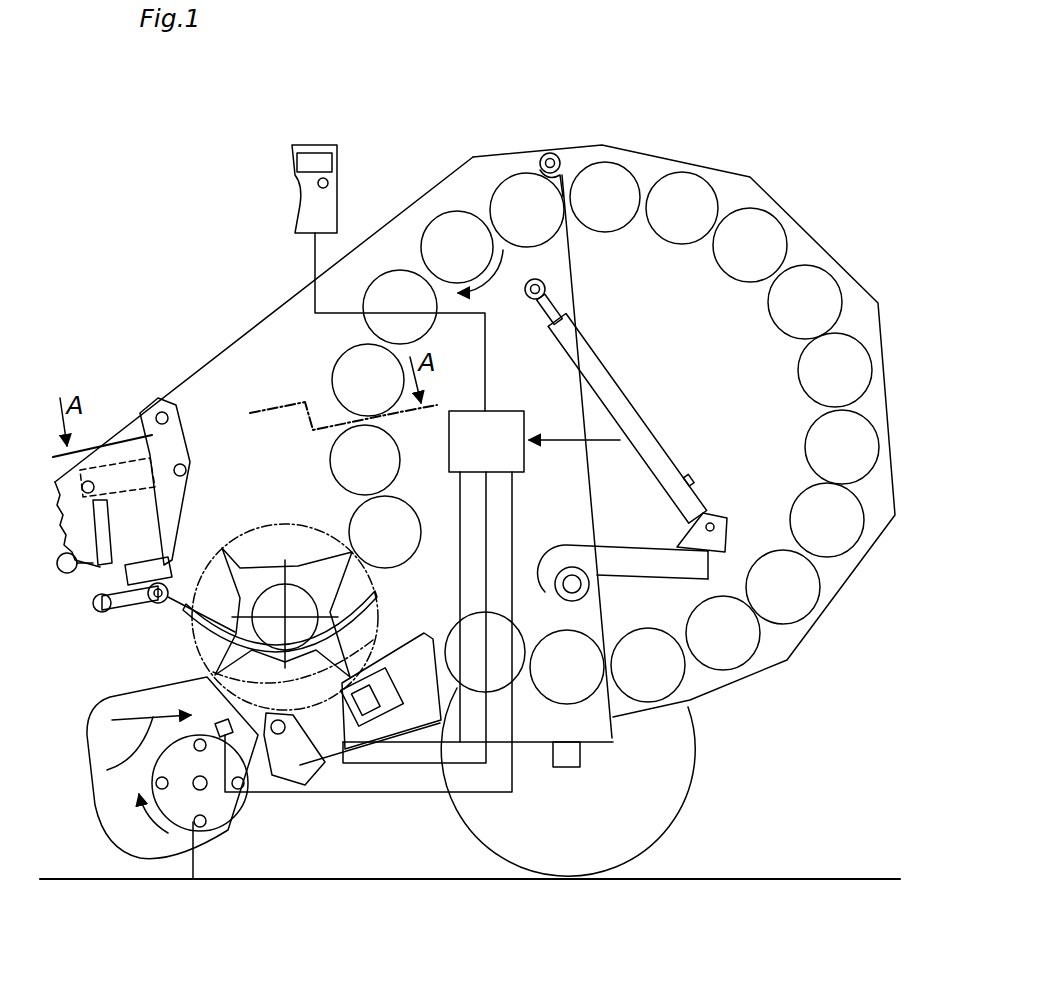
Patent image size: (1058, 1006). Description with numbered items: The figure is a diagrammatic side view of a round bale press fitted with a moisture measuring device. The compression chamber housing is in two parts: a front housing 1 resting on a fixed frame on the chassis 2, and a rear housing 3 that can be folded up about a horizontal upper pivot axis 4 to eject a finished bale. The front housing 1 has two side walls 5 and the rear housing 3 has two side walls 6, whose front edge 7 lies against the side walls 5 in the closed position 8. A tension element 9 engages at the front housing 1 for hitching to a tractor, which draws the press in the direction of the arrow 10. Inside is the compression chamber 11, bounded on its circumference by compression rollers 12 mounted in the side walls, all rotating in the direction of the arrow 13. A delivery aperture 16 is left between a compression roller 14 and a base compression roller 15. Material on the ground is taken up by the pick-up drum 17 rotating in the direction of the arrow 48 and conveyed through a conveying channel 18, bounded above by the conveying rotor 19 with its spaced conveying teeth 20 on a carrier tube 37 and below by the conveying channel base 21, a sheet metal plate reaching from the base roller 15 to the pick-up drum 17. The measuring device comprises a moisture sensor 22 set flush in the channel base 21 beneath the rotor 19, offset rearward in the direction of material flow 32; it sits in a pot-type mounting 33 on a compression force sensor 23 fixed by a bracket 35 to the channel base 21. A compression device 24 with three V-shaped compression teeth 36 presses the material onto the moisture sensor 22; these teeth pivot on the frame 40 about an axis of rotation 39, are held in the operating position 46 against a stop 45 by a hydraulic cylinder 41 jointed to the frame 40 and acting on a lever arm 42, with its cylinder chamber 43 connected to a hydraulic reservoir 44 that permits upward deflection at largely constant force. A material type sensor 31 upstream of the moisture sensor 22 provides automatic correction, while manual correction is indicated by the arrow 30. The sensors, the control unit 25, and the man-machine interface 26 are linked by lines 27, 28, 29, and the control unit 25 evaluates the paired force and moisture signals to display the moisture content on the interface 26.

The front housing 1 is at (266, 304).
The chassis 2 is at (586, 770).
The rear housing 3 is at (722, 160).
The horizontal upper pivot axis 4 is at (551, 158).
The side walls of the front housing 5 is at (222, 388).
The side walls of the rear housing 6 is at (746, 192).
The front edge 7 is at (571, 280).
The closed position 8 is at (685, 110).
The tension element 9 is at (113, 458).
The direction of travel arrow 10 is at (114, 147).
The compression chamber 11 is at (715, 399).
The compression rollers 12 is at (457, 210).
The direction of rotation arrow 13 is at (500, 272).
The compression roller 14 is at (413, 558).
The base compression roller 15 is at (516, 690).
The delivery aperture 16 is at (313, 630).
The pick-up drum 17 is at (148, 858).
The conveying channel 18 is at (388, 742).
The conveying rotor 19 is at (304, 560).
The conveying teeth 20 is at (230, 570).
The conveying channel base 21 is at (326, 720).
The moisture sensor 22 is at (382, 668).
The compression force sensor 23 is at (430, 742).
The compression device 24 is at (168, 629).
The control unit 25 is at (486, 441).
The man-machine interface 26 is at (328, 198).
The line 27 is at (460, 498).
The line 28 is at (487, 500).
The line 29 is at (486, 356).
The arrow 30 is at (567, 440).
The material type sensor 31 is at (222, 736).
The direction of flow of the material 32 is at (93, 753).
The pot-type mounting 33 is at (400, 745).
The bracket 35 is at (447, 722).
The compression teeth 36 is at (215, 600).
The carrier tube 37 is at (275, 590).
The axis of rotation 39 is at (140, 622).
The frame 40 is at (143, 430).
The hydraulic cylinder 41 is at (160, 500).
The lever arm 42 is at (148, 598).
The cylinder chamber 43 is at (100, 608).
The hydraulic reservoir 44 is at (67, 574).
The stop 45 is at (140, 565).
The operating position 46 is at (275, 780).
The direction of rotation arrow of the pick-up drum 48 is at (137, 828).